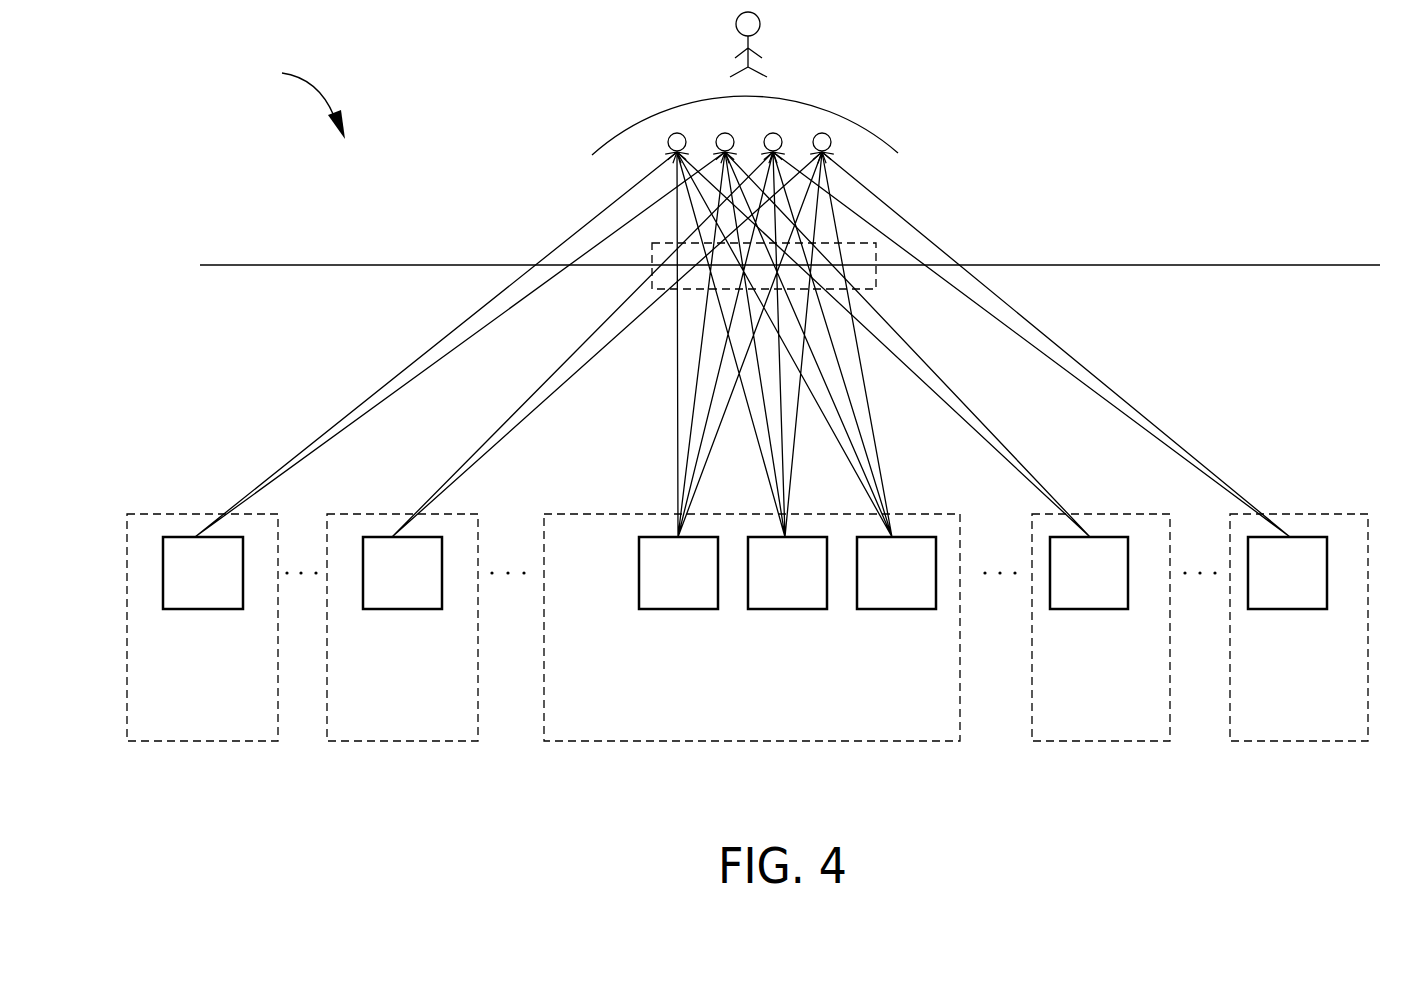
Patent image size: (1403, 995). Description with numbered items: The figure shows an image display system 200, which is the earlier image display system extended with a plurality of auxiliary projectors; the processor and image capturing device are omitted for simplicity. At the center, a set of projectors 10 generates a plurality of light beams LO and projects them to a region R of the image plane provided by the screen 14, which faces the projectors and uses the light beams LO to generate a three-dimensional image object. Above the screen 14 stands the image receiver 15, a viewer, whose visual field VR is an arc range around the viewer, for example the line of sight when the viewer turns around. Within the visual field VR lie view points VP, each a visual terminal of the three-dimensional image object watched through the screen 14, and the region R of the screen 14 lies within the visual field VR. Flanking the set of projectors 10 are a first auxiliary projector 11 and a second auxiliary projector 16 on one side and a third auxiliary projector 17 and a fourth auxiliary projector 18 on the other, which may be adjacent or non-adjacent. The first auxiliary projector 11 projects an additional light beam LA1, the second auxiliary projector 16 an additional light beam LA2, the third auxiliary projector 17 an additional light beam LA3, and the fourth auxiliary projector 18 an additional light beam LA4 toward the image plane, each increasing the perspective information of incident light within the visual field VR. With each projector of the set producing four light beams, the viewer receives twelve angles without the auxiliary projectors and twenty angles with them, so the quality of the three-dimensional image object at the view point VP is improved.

The image display system 200 is at (289, 96).
The set of projectors 10 is at (742, 741).
The first auxiliary projector 11 is at (1090, 741).
The screen 14 is at (1240, 266).
The image receiver 15 is at (759, 31).
The second auxiliary projector 16 is at (1288, 741).
The third auxiliary projector 17 is at (421, 741).
The fourth auxiliary projector 18 is at (223, 741).
The view point VP is at (668, 143).
The visual field VR is at (891, 147).
The region R is at (876, 289).
The light beams LO is at (672, 378).
The additional light beam LA1 is at (960, 395).
The additional light beam LA2 is at (1127, 403).
The additional light beam LA3 is at (513, 407).
The additional light beam LA4 is at (357, 402).